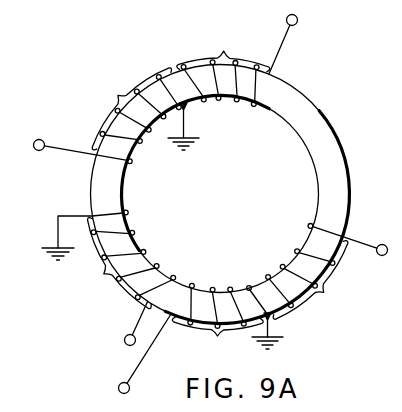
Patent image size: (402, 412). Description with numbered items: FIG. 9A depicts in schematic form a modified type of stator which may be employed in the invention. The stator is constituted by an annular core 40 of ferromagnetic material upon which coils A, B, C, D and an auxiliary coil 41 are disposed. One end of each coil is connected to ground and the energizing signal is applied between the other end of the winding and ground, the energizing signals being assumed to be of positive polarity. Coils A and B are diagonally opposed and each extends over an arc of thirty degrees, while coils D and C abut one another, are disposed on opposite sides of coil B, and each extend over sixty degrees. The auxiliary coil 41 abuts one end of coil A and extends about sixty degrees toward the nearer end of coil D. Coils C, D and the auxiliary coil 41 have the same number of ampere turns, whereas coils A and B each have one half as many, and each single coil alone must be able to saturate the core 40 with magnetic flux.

The annular core 40 is at (336, 163).
The auxiliary coil 41 is at (138, 139).
The coil A is at (244, 61).
The coil B is at (201, 341).
The coil C is at (327, 272).
The coil D is at (109, 280).